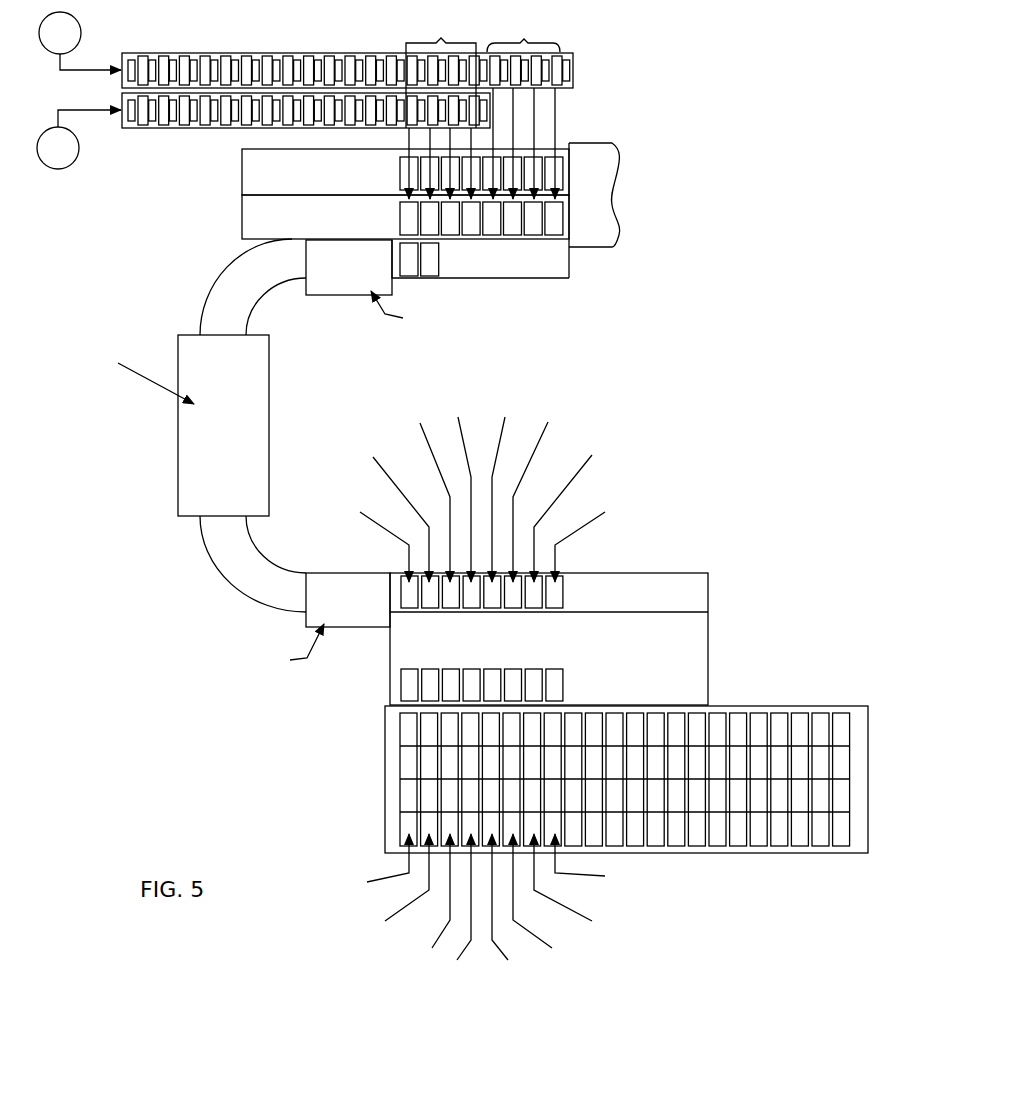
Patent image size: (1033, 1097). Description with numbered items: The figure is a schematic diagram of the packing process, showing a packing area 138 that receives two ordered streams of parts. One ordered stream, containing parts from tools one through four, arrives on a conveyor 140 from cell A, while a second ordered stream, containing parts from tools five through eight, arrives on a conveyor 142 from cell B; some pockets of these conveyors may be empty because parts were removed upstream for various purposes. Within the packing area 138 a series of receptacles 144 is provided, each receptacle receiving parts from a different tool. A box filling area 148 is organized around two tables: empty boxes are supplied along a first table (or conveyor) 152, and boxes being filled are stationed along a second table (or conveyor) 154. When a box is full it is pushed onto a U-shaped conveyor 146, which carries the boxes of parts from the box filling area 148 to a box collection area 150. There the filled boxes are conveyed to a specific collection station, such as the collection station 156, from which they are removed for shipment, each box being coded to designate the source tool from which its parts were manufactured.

The packing area 138 is at (715, 340).
The conveyor 140 is at (153, 53).
The conveyor 142 is at (152, 128).
The receptacles 144 is at (447, 228).
The U-shaped conveyor 146 is at (557, 278).
The box filling area 148 is at (678, 157).
The box collection area 150 is at (350, 765).
The first table 152 is at (253, 173).
The second table 154 is at (253, 207).
The collection station 156 is at (641, 584).